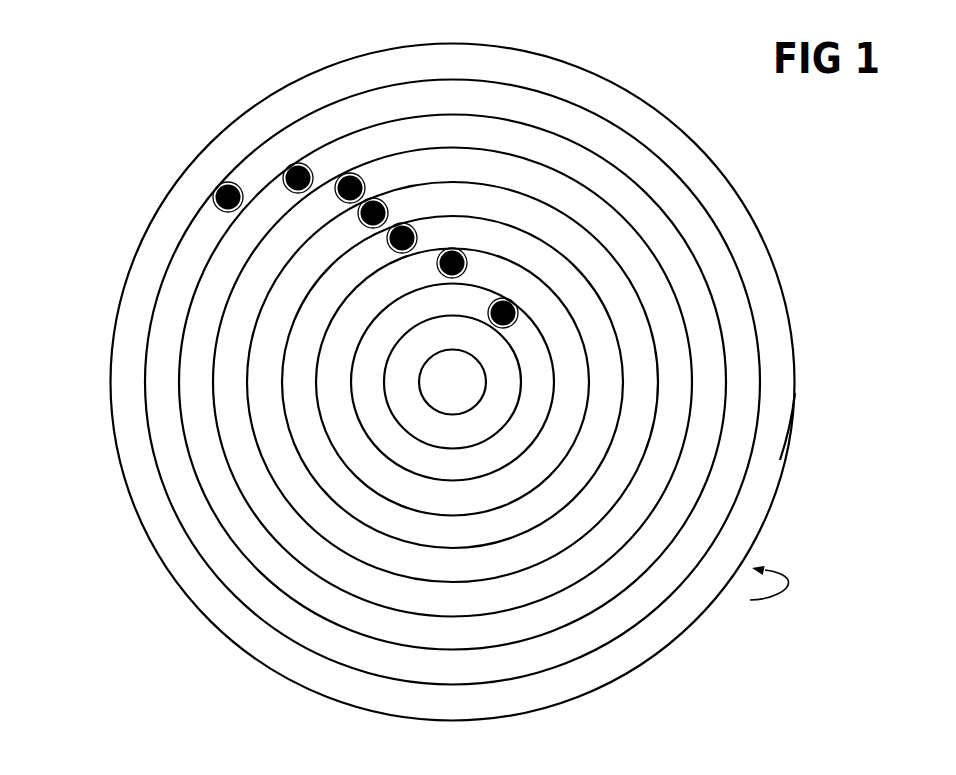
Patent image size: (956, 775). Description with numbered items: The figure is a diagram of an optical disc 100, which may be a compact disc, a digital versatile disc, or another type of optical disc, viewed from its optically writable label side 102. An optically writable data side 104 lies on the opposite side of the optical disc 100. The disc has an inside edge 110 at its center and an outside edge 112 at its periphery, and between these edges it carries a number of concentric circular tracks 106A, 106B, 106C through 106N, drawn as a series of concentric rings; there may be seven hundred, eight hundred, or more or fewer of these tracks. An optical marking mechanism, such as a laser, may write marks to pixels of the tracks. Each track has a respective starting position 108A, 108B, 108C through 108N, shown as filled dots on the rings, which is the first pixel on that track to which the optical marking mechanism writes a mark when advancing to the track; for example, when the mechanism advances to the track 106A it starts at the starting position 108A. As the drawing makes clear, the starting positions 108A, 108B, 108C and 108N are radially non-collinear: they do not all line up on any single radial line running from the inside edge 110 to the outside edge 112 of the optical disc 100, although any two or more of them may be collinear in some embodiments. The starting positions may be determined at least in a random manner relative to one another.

The optical disc 100 is at (100, 104).
The optically writable label side 102 is at (340, 74).
The optically writable data side 104 is at (760, 599).
The track 106A is at (478, 506).
The track 106B is at (478, 540).
The track 106C is at (478, 574).
The track 106N is at (478, 674).
The starting position 108A is at (533, 292).
The starting position 108B is at (470, 236).
The starting position 108C is at (387, 212).
The starting position 108N is at (213, 190).
The inside edge 110 is at (484, 390).
The outside edge 112 is at (795, 393).